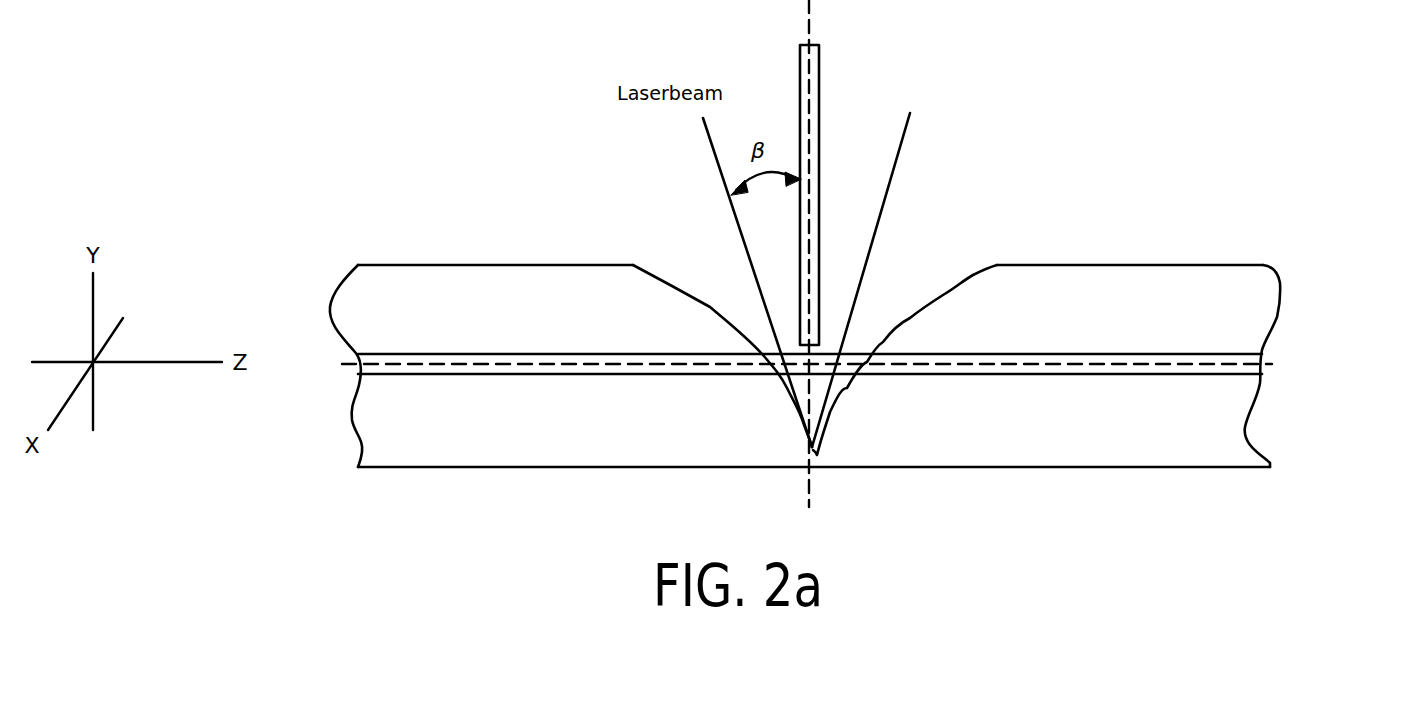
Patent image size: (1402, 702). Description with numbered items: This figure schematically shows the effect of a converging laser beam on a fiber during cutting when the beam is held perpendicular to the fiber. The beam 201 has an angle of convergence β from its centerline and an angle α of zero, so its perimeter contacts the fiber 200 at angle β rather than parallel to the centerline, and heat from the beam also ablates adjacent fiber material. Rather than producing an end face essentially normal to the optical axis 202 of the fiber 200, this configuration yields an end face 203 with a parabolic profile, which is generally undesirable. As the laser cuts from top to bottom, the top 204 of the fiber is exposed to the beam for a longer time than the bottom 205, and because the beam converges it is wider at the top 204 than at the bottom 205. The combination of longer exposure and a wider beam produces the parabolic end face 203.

The fiber 200 is at (403, 278).
The beam 201 is at (820, 118).
The optical axis 202 is at (1262, 368).
The end face 203 is at (709, 300).
The top 204 is at (1043, 264).
The bottom 205 is at (988, 468).